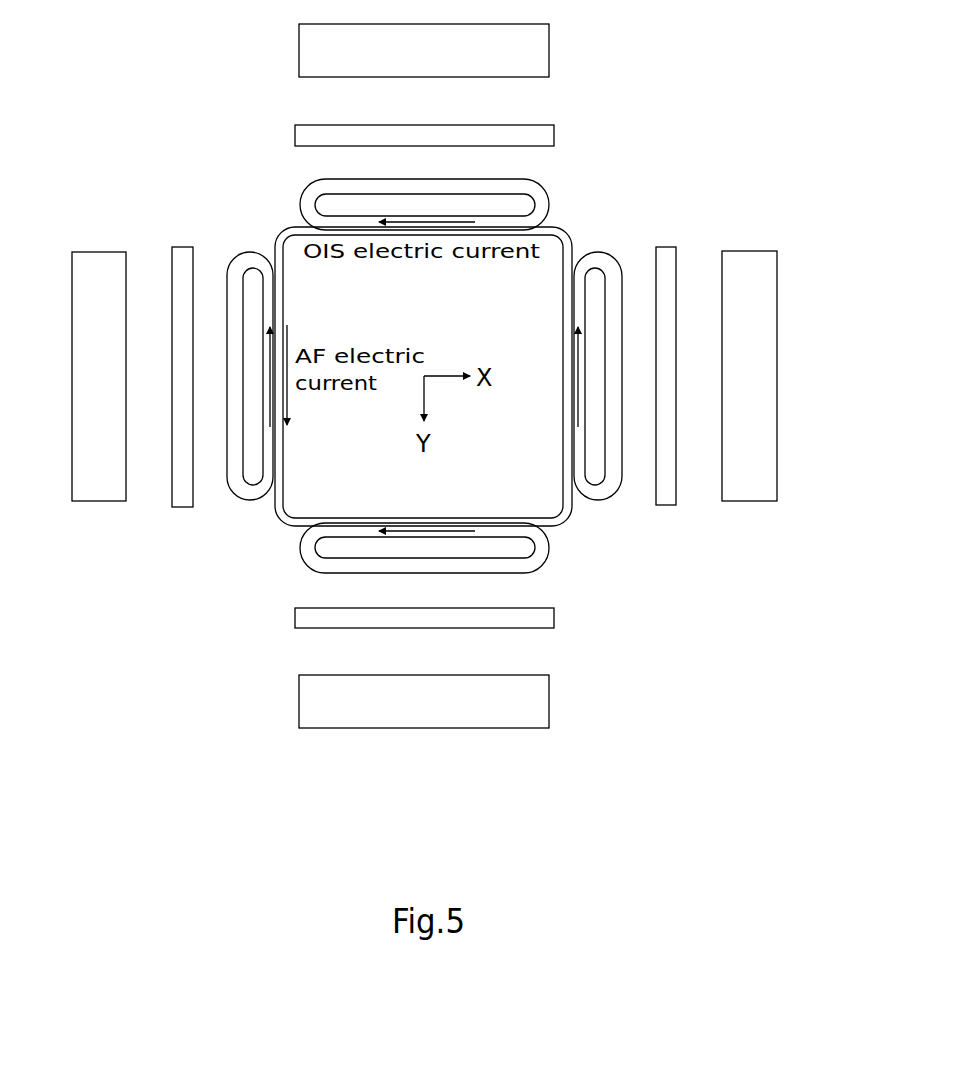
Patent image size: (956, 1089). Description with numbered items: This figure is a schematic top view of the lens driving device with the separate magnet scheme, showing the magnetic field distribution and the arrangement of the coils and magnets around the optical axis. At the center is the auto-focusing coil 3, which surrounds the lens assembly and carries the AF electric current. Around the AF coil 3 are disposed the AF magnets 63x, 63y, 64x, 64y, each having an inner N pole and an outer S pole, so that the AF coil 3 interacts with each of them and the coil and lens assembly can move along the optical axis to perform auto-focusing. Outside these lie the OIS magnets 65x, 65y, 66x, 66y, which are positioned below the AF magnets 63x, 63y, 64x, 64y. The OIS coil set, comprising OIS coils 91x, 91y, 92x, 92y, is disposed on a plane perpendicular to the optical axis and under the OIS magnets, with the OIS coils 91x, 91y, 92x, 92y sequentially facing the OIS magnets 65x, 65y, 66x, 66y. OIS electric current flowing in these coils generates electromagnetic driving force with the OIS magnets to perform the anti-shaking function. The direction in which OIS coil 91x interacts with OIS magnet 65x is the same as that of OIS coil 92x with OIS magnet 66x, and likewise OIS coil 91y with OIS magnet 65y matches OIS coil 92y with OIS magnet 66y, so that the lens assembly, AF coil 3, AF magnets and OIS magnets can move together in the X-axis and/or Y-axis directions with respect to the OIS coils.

The auto-focusing coil 3 is at (538, 233).
The OIS coil 92y is at (538, 190).
The OIS coil 91y is at (537, 563).
The OIS coil 92x is at (260, 492).
The OIS coil 91x is at (587, 492).
The OIS magnet 66y is at (537, 36).
The AF magnet 64y is at (537, 133).
The AF magnet 63y is at (537, 620).
The OIS magnet 65y is at (537, 715).
The OIS magnet 66x is at (100, 492).
The AF magnet 64x is at (182, 492).
The AF magnet 63x is at (667, 492).
The OIS magnet 65x is at (749, 492).